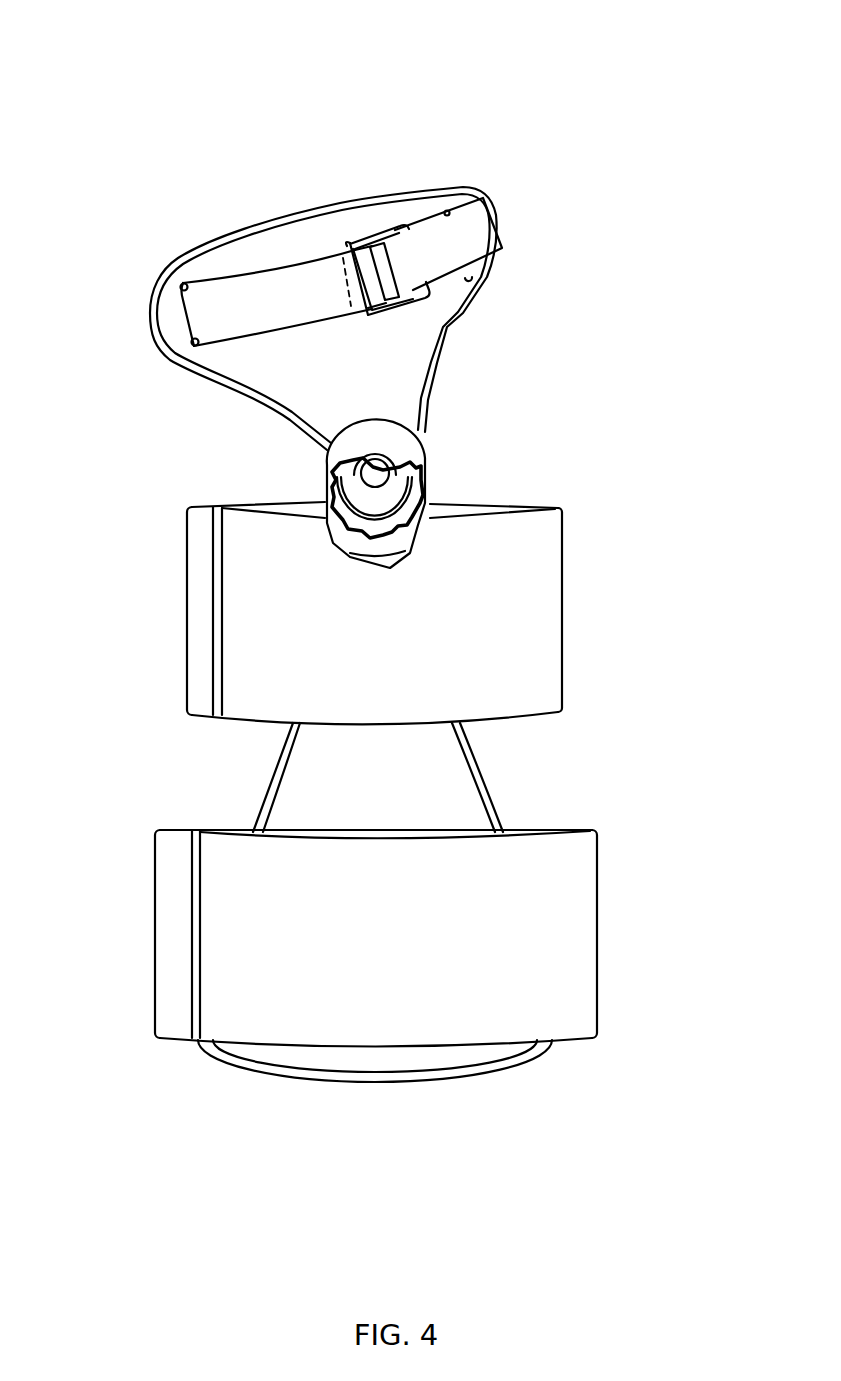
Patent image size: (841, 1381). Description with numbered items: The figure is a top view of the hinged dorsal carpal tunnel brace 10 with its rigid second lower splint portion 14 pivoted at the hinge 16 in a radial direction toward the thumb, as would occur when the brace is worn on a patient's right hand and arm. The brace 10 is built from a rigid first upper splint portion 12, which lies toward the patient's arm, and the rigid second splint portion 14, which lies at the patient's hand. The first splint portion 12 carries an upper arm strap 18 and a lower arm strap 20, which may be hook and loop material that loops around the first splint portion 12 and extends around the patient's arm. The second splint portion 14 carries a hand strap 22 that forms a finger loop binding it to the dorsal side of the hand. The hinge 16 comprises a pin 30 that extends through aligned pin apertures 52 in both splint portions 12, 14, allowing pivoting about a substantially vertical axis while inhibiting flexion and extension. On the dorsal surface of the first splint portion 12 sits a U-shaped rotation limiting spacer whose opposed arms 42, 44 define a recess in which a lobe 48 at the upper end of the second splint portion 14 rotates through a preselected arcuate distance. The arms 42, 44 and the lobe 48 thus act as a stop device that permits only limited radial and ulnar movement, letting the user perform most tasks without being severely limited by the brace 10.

The hinged dorsal carpal tunnel brace 10 is at (582, 148).
The first upper splint portion 12 is at (317, 768).
The second lower splint portion 14 is at (252, 368).
The hinge 16 is at (458, 466).
The upper arm strap 18 is at (155, 917).
The lower arm strap 20 is at (187, 607).
The hand strap 22 is at (197, 314).
The pin 30 is at (410, 452).
The arm 42 is at (417, 484).
The arm 44 is at (335, 475).
The lobe 48 is at (377, 502).
The pin aperture 52 is at (367, 455).